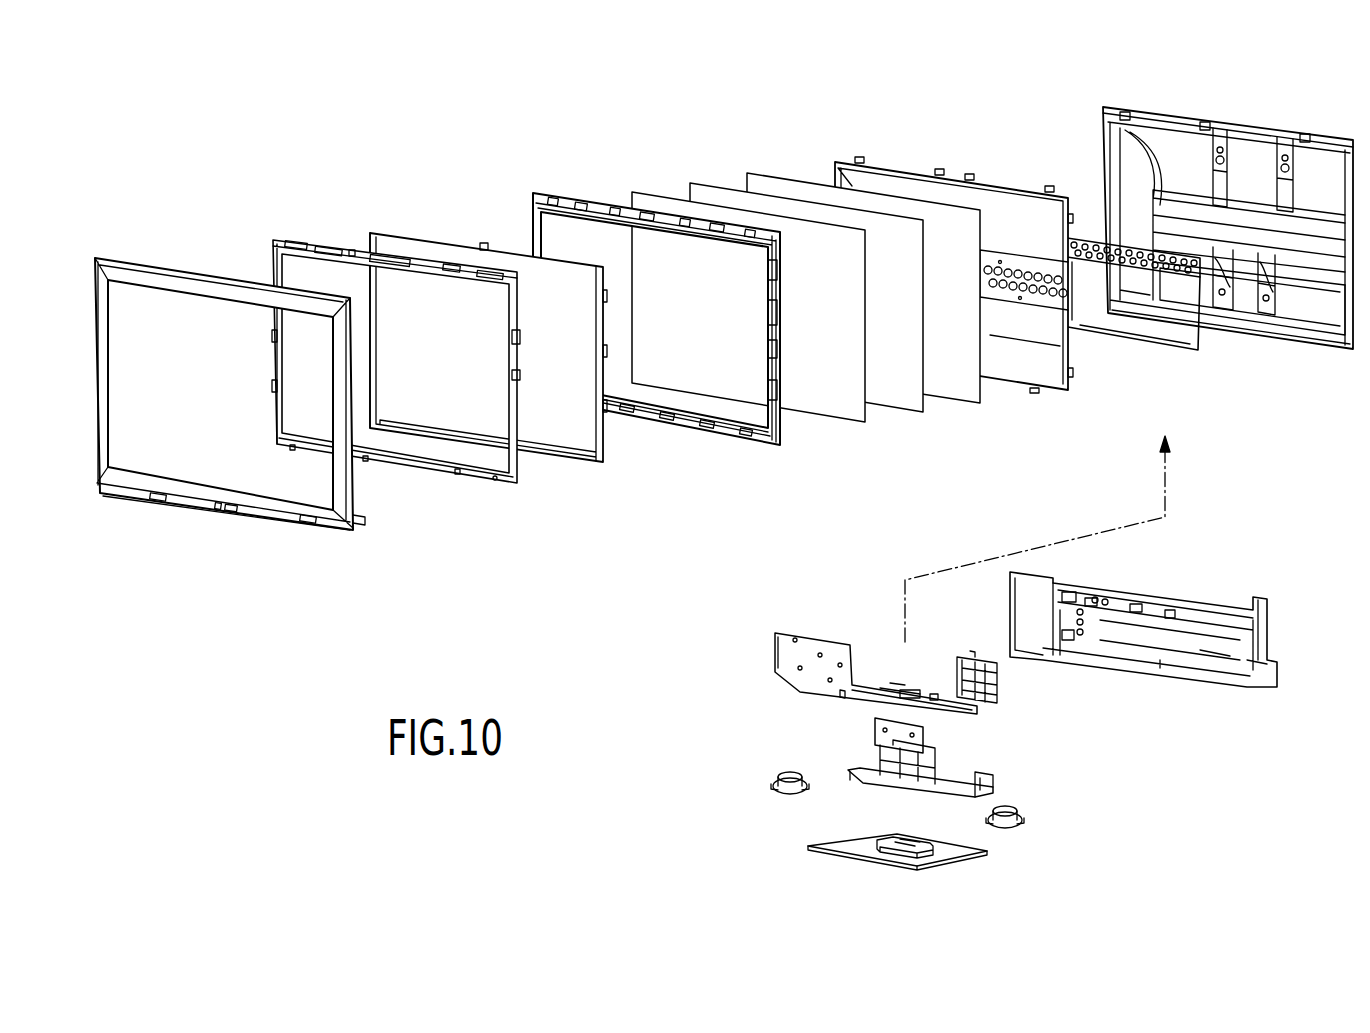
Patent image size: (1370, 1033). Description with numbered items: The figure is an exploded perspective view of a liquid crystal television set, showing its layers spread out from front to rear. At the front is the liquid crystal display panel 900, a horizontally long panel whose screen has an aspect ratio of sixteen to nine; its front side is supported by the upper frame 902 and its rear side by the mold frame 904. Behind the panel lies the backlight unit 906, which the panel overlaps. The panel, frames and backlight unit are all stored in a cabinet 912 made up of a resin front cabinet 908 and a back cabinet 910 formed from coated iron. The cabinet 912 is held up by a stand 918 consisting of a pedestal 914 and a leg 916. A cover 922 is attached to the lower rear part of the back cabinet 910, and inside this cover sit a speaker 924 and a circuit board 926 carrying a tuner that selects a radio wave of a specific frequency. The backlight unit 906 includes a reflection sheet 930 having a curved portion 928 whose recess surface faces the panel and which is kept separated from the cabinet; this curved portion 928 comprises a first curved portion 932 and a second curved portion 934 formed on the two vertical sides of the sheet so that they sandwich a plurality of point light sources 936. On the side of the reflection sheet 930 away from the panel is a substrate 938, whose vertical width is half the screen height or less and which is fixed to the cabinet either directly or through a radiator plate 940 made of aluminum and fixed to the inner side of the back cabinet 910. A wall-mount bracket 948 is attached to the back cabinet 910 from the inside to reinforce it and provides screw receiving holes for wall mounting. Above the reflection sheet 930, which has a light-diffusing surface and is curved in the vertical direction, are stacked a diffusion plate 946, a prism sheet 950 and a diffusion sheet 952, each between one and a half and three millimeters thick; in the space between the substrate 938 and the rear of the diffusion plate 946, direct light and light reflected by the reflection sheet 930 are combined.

The liquid crystal display panel 900 is at (590, 465).
The upper frame 902 is at (453, 480).
The mold frame 904 is at (705, 440).
The backlight unit 906 is at (1165, 432).
The front cabinet 908 is at (193, 262).
The back cabinet 910 is at (1157, 105).
The cabinet 912 is at (505, 89).
The pedestal 914 is at (993, 852).
The leg 916 is at (993, 783).
The stand 918 is at (1095, 777).
The cover 922 is at (1263, 692).
The speaker 924 is at (790, 798).
The circuit board 926 is at (963, 715).
The curved portion 928 is at (1007, 285).
The reflection sheet 930 is at (1057, 365).
The first curved portion 932 is at (1002, 208).
The second curved portion 934 is at (1013, 362).
The point light sources 936 is at (1072, 263).
The substrate 938 is at (1095, 267).
The radiator plate 940 is at (1308, 240).
The diffusion plate 946 is at (938, 405).
The wall-mount bracket 948 is at (1223, 127).
The prism sheet 950 is at (888, 413).
The diffusion sheet 952 is at (828, 422).